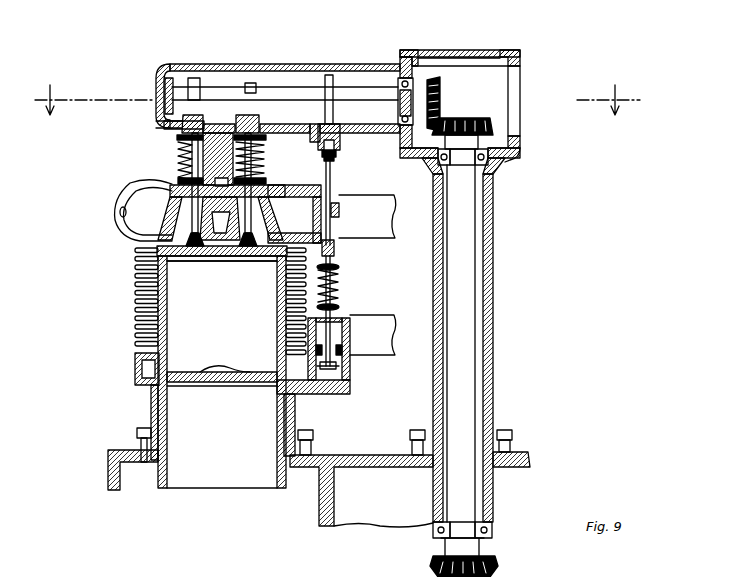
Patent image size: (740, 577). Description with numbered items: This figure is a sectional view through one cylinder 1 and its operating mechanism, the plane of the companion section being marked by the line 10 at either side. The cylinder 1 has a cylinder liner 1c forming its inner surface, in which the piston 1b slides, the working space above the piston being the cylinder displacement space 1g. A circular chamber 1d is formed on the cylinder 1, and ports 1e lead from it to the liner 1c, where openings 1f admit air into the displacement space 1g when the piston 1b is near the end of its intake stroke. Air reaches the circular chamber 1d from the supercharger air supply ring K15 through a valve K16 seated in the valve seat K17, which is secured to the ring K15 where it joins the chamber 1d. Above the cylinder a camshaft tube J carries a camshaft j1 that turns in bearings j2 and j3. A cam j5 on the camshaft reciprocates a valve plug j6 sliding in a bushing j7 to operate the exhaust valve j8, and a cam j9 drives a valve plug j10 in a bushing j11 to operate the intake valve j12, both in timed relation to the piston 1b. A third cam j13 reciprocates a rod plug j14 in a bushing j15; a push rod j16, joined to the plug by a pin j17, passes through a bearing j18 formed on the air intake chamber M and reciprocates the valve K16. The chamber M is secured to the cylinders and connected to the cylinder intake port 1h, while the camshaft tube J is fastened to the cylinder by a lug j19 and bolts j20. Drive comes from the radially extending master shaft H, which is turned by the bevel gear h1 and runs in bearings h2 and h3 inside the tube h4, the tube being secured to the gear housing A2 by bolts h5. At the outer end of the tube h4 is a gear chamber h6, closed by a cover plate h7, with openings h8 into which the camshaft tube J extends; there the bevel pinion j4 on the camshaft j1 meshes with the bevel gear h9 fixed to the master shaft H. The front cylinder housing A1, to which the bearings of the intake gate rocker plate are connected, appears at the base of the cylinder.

The section line 10— 10 is at (58, 140).
The camshaft tube J is at (314, 65).
The camshaft j1 is at (363, 96).
The bearing j2 is at (387, 74).
The bearing j3 is at (170, 67).
The bevel pinion j4 is at (433, 82).
The cam j5 is at (198, 78).
The valve plug j6 is at (180, 136).
The bushing j7 is at (162, 123).
The exhaust valve j8 is at (178, 172).
The cam j9 is at (249, 83).
The valve plug j10 is at (257, 118).
The bushing j11 is at (275, 118).
The intake valve j12 is at (265, 163).
The cam j13 is at (329, 104).
The rod plug j14 is at (322, 140).
The bushing j15 is at (338, 136).
The push rod j16 is at (333, 190).
The pin j17 is at (336, 155).
The bearing j18 is at (341, 208).
The lug j19 is at (212, 160).
The bolts j20 is at (180, 186).
The air intake chamber M is at (378, 224).
The cover plate h7 is at (496, 52).
The openings h8 is at (516, 90).
The bevel gear h9 is at (543, 110).
The bearing h3 is at (498, 170).
The gear chamber h6 is at (516, 160).
The master shaft H is at (466, 266).
The tube h4 is at (494, 306).
The bolts h5 is at (420, 430).
The bearing h2 is at (494, 531).
The bevel gear h1 is at (466, 553).
The cylinder 1 is at (152, 314).
The cylinder displacement space 1g is at (180, 291).
The cylinder liner 1c is at (150, 336).
The circular chamber 1d is at (150, 359).
The piston 1b is at (250, 386).
The ports 1e is at (150, 381).
The openings 1f is at (160, 395).
The cylinder intake port 1h is at (270, 212).
The front cylinder housing A1 is at (108, 456).
The gear housing A2 is at (326, 527).
The supercharger air supply ring K15 is at (385, 322).
The valve K16 is at (351, 371).
The valve seat K17 is at (350, 346).